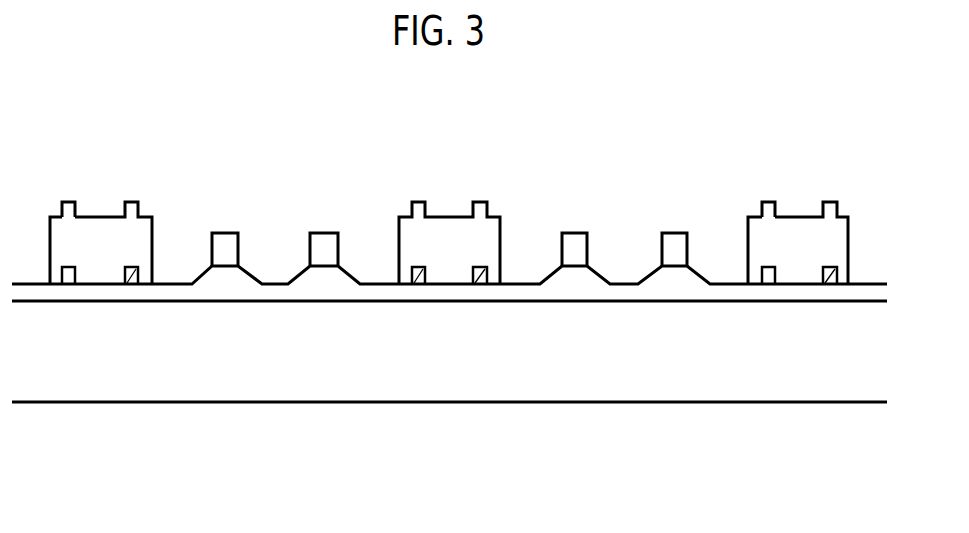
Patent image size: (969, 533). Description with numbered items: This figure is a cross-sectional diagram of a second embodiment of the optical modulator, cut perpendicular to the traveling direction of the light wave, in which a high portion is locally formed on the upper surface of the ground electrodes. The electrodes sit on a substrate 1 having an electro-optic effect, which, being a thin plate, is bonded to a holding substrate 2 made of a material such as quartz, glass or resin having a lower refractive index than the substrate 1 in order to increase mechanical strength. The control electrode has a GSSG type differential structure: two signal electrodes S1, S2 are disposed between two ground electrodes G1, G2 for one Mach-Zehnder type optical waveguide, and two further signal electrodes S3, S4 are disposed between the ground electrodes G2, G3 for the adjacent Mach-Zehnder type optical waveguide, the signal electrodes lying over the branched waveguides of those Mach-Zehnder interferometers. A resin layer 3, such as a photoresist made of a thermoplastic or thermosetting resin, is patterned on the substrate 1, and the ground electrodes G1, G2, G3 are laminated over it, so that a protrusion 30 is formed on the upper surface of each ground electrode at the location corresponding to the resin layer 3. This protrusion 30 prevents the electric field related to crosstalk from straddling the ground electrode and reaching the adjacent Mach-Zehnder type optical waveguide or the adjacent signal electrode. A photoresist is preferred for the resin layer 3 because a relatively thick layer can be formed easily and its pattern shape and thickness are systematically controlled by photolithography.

The substrate 1 is at (163, 293).
The holding substrate 2 is at (458, 365).
The resin layer 3 is at (74, 268).
The protrusion 30 is at (63, 200).
The ground electrode G1 is at (97, 202).
The ground electrode G2 is at (452, 200).
The ground electrode G3 is at (798, 200).
The signal electrode S1 is at (225, 229).
The signal electrode S2 is at (324, 229).
The signal electrode S3 is at (574, 229).
The signal electrode S4 is at (673, 229).